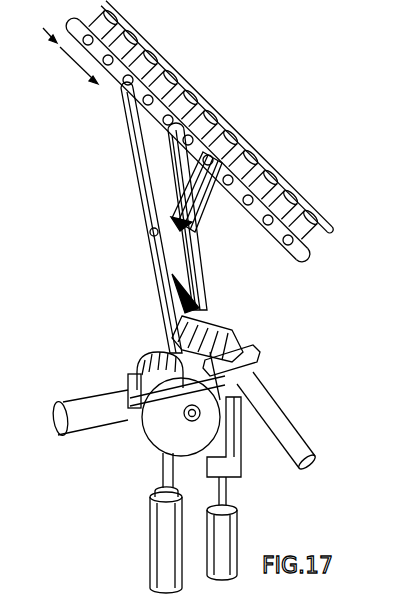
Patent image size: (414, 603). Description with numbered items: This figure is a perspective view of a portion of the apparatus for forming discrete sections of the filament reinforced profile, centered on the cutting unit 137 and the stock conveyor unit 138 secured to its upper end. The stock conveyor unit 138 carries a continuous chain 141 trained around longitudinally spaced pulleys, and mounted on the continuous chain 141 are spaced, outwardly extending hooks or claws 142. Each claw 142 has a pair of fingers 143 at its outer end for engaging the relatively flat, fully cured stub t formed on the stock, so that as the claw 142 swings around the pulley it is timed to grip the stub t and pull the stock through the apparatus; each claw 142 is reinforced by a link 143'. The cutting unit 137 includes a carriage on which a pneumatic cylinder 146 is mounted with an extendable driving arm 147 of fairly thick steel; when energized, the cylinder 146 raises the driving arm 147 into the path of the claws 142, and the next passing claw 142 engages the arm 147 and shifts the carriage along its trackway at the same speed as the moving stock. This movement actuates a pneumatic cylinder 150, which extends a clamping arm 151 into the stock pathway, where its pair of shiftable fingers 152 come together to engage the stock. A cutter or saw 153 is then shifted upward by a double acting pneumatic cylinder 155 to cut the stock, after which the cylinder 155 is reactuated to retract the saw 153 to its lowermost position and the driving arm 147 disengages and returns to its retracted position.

The cutting unit 137 is at (141, 458).
The stock conveyor unit 138 is at (243, 121).
The continuous chain 141 is at (215, 120).
The claw 142 is at (131, 171).
The fingers 143 is at (158, 226).
The link 143' is at (217, 207).
The pneumatic cylinder 146 is at (228, 535).
The driving arm 147 is at (240, 417).
The pneumatic cylinder 150 is at (85, 402).
The clamping arm 151 is at (140, 368).
The shiftable fingers 152 is at (245, 362).
The saw 153 is at (145, 433).
The double acting pneumatic cylinder 155 is at (160, 548).
The stub t is at (223, 326).